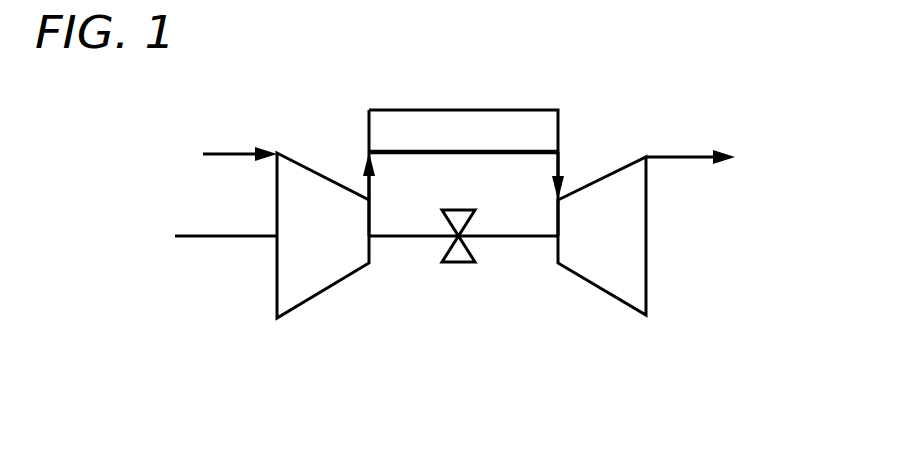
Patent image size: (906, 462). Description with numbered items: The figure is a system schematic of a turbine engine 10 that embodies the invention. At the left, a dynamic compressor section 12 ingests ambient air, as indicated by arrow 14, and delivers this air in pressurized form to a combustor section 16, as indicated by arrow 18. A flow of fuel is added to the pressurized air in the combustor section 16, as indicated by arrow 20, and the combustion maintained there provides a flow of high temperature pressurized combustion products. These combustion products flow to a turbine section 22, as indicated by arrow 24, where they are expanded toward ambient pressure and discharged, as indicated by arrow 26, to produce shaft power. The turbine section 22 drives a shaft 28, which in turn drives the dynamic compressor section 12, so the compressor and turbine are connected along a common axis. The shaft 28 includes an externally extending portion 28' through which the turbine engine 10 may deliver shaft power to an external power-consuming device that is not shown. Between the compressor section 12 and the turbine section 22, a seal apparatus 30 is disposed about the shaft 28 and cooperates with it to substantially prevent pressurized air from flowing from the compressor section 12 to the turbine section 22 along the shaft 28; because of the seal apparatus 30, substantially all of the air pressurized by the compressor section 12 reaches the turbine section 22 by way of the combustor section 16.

The turbine engine 10 is at (703, 88).
The dynamic compressor section 12 is at (305, 290).
The arrow indicating ambient air ingestion 14 is at (210, 151).
The combustor section 16 is at (485, 110).
The arrow indicating pressurized air delivery 18 is at (371, 187).
The arrow indicating fuel flow 20 is at (392, 110).
The turbine section 22 is at (625, 231).
The arrow indicating combustion products flow 24 is at (560, 158).
The arrow indicating discharge 26 is at (710, 161).
The shaft 28 is at (463, 281).
The externally extending portion of the shaft 28' is at (208, 263).
The seal apparatus 30 is at (447, 262).